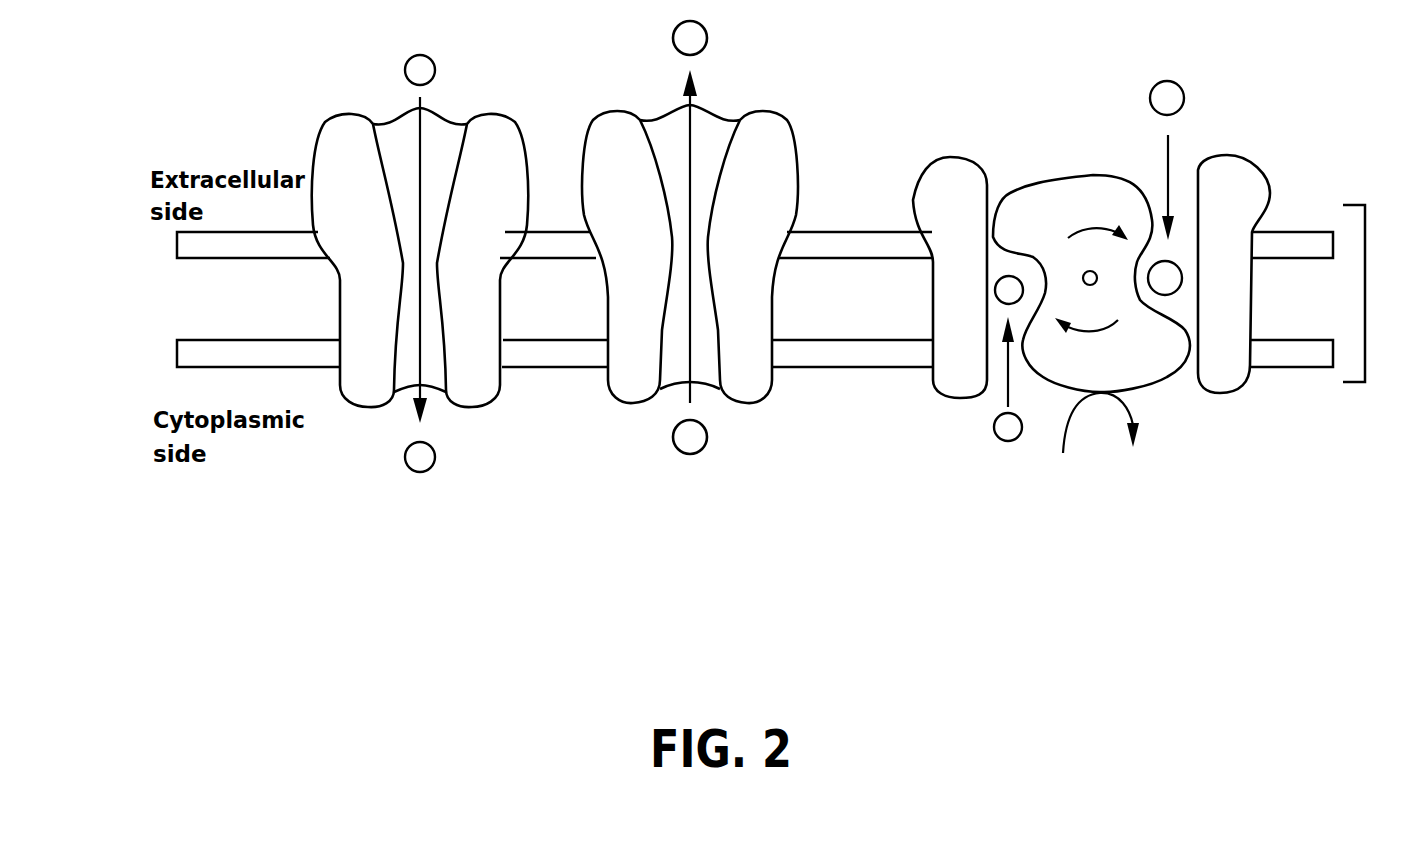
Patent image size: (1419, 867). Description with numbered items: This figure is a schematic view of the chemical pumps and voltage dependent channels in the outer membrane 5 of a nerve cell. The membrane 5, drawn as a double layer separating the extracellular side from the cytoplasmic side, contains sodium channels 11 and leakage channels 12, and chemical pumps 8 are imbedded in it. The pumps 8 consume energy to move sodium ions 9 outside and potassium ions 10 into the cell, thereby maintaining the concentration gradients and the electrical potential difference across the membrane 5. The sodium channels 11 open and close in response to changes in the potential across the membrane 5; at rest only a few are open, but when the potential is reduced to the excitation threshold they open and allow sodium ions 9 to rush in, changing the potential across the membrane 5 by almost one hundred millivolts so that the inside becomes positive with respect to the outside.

The cell membrane 5 is at (1367, 283).
The chemical pump 8 is at (1008, 480).
The sodium ion 9 is at (434, 464).
The potassium ion 10 is at (1183, 107).
The sodium channel 11 is at (341, 140).
The leakage channel 12 is at (773, 145).